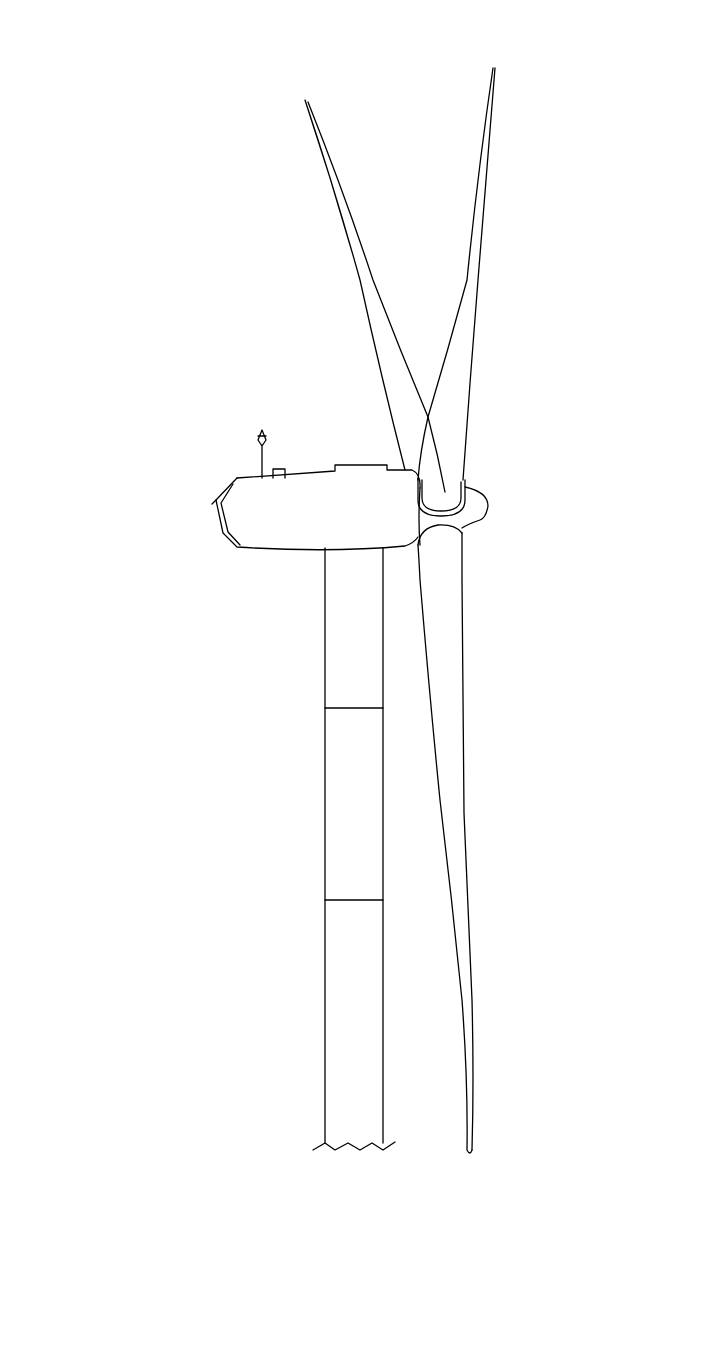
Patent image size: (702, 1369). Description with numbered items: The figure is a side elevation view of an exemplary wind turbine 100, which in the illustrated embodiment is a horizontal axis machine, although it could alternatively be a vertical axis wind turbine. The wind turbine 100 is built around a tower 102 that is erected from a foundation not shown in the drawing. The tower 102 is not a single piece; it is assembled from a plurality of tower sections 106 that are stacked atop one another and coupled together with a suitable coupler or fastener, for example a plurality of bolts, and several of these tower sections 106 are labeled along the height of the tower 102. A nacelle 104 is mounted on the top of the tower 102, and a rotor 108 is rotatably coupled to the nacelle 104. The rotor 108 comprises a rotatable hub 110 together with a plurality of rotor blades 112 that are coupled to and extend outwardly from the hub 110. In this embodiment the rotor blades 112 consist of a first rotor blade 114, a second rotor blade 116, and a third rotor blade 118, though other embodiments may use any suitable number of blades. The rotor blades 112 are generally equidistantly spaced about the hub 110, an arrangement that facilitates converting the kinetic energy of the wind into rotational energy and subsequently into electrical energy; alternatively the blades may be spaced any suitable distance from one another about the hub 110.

The wind turbine 100 is at (146, 76).
The tower 102 is at (143, 807).
The nacelle 104 is at (322, 478).
The tower sections 106 is at (325, 615).
The rotor 108 is at (521, 466).
The hub 110 is at (481, 520).
The rotor blades 112 is at (437, 122).
The first rotor blade 114 is at (483, 250).
The second rotor blade 116 is at (345, 191).
The third rotor blade 118 is at (463, 813).